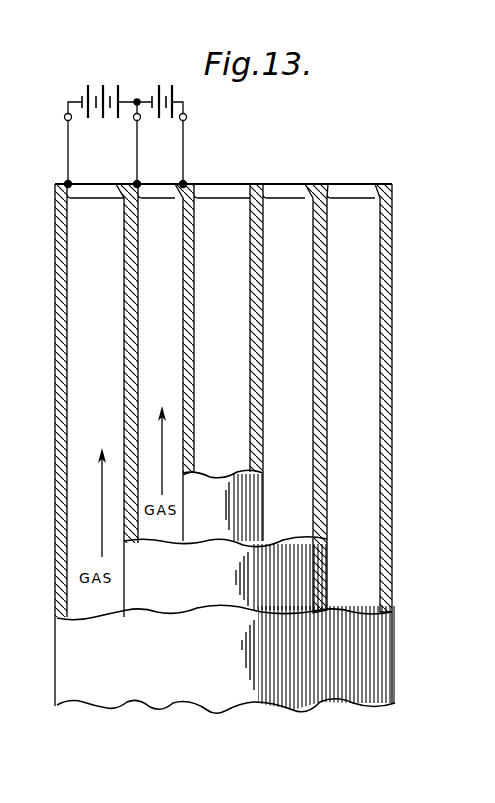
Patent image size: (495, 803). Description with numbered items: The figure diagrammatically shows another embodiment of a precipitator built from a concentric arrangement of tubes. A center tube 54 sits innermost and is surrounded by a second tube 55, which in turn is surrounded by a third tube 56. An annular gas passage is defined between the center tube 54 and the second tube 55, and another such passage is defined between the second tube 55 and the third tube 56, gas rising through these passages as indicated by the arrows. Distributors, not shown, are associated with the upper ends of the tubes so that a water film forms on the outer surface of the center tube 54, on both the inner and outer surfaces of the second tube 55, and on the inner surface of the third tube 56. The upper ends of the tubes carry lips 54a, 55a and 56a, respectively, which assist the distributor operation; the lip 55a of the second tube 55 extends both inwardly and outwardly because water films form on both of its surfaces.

The center tube 54 is at (249, 203).
The lip 54a is at (267, 184).
The second tube 55 is at (320, 218).
The lip 55a is at (330, 186).
The third tube 56 is at (389, 213).
The lip 56a is at (374, 183).